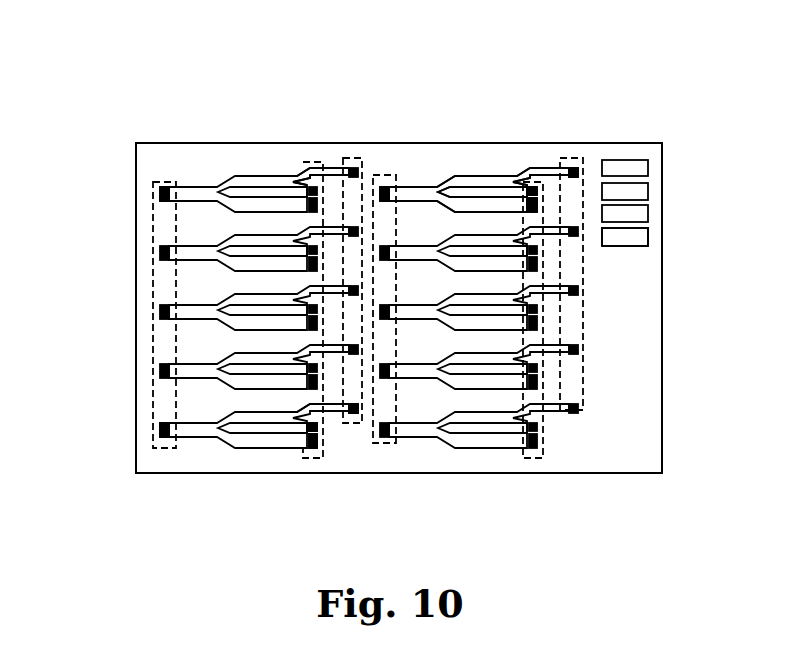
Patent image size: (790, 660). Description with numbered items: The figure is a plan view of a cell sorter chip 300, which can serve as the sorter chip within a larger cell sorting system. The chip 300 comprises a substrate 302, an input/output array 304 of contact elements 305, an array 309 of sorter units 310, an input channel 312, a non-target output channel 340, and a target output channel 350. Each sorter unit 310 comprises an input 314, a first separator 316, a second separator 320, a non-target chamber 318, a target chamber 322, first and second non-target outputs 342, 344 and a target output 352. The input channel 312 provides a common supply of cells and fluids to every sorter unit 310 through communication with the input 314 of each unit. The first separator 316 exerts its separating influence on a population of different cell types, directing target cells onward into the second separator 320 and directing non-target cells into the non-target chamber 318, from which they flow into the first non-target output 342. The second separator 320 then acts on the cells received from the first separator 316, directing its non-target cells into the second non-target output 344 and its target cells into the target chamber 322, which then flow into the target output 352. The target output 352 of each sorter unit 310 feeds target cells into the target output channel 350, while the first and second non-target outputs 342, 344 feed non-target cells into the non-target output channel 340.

The cell sorter chip 300 is at (373, 80).
The substrate 302 is at (560, 158).
The input/output array 304 is at (654, 216).
The contact element 305 is at (633, 247).
The array 309 is at (505, 172).
The sorter unit 310 is at (226, 176).
The input channel 312 is at (153, 216).
The input 314 is at (160, 194).
The first separator 316 is at (200, 186).
The non-target chamber 318 is at (252, 209).
The second separator 320 is at (269, 175).
The target chamber 322 is at (313, 178).
The non-target output channel 340 is at (323, 466).
The first non-target output 342 is at (313, 460).
The second non-target output 344 is at (318, 434).
The target output channel 350 is at (365, 158).
The target output 352 is at (354, 414).